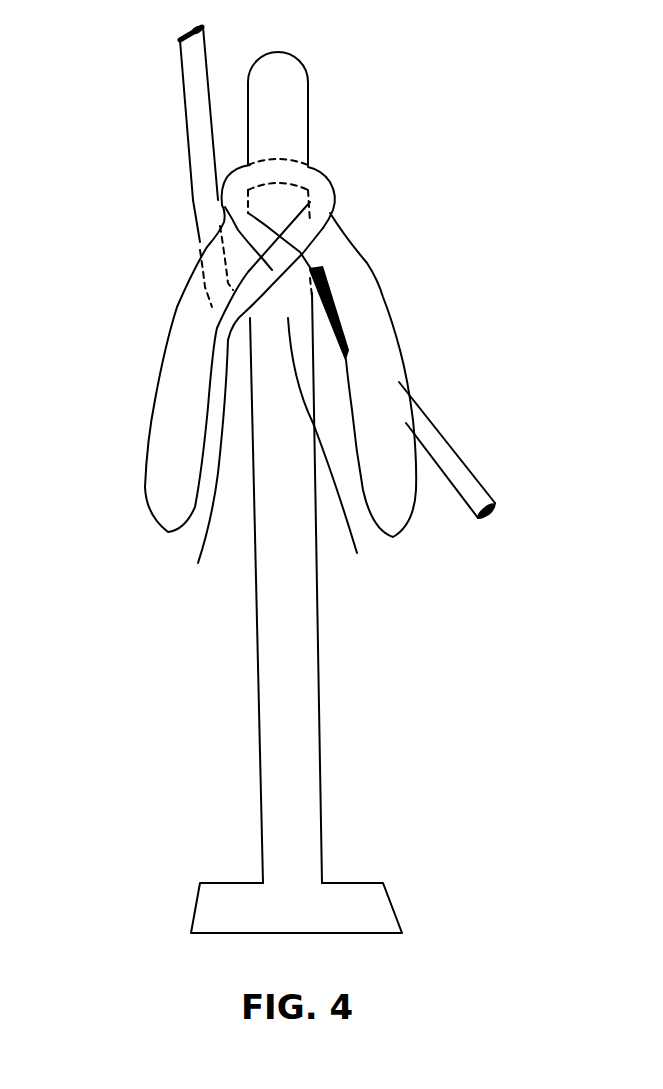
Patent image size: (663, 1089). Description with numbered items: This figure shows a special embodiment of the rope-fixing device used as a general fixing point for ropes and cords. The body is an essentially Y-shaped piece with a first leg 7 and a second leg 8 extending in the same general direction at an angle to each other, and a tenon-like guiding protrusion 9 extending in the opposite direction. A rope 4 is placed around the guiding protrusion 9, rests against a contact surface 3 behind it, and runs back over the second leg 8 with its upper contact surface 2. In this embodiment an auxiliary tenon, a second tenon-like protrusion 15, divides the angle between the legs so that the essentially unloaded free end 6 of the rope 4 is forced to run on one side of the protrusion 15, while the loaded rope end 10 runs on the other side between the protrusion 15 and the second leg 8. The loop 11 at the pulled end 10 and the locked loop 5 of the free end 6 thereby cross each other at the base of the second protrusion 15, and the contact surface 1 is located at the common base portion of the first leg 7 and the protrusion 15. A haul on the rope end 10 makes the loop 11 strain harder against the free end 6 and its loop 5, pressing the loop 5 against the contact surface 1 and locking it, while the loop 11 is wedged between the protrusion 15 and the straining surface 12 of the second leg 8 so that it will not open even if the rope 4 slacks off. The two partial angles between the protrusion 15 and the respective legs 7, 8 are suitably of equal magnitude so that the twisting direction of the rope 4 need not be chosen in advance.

The contact surface 1 is at (304, 251).
The upper contact surface 2 is at (242, 242).
The contact surface 3 is at (317, 159).
The rope 4 is at (168, 68).
The locked loop 5 is at (293, 280).
The free end 6 is at (442, 448).
The first leg 7 is at (373, 343).
The second leg 8 is at (178, 389).
The tenon-like guiding protrusion 9 is at (283, 95).
The rope end 10 is at (197, 107).
The loop 11 is at (200, 477).
The straining surface 12 is at (221, 298).
The second tenon-like protrusion 15 is at (334, 466).